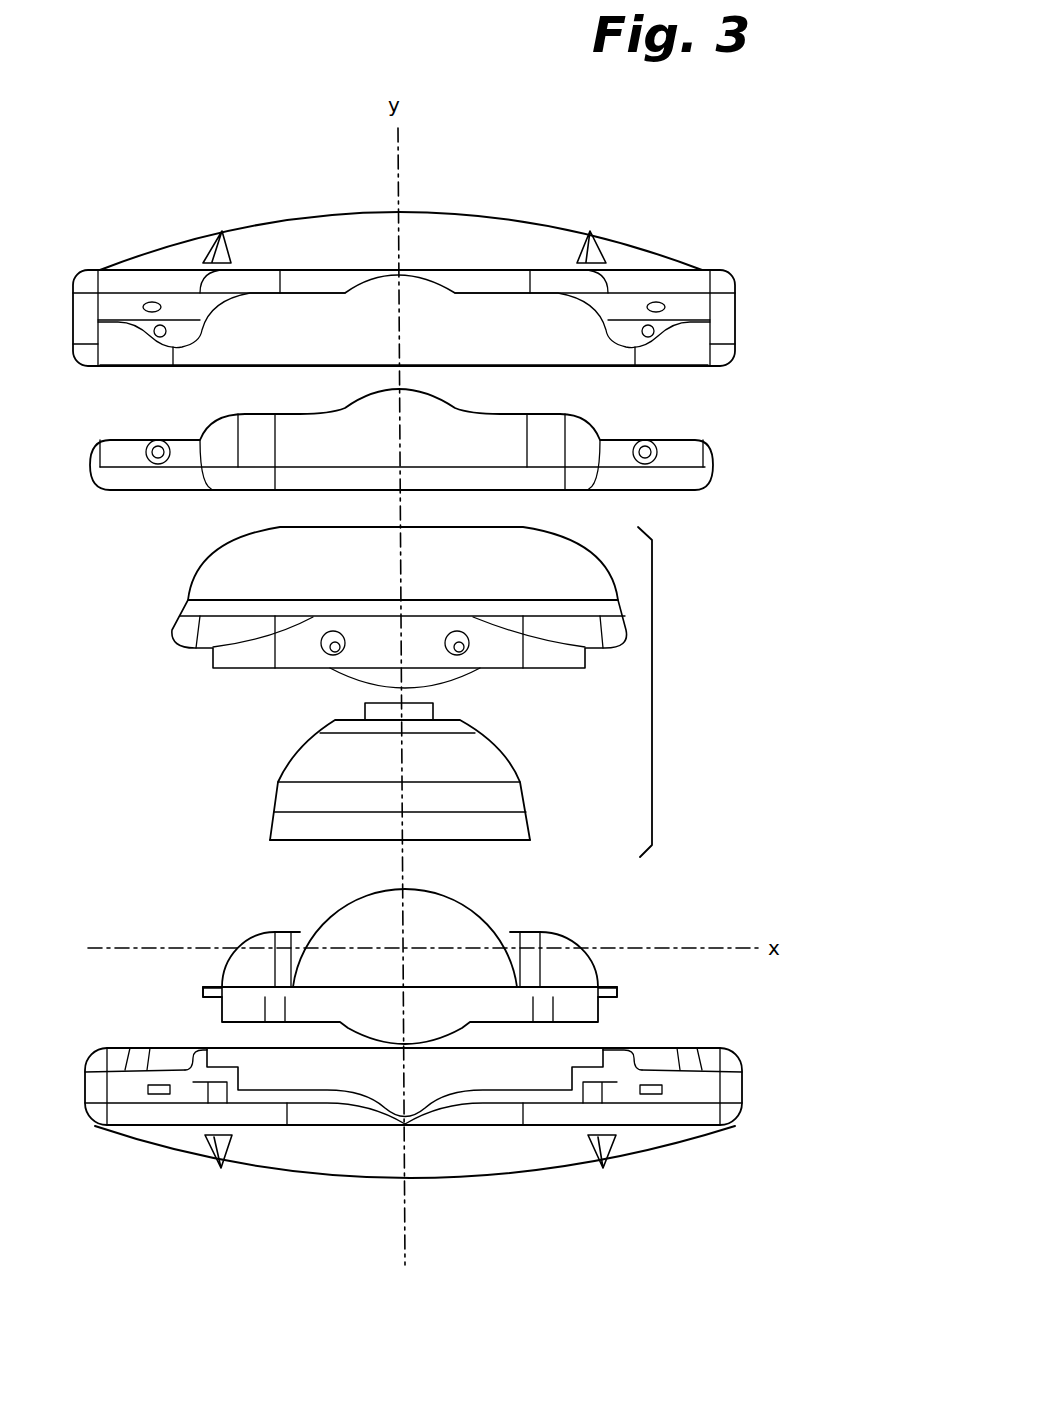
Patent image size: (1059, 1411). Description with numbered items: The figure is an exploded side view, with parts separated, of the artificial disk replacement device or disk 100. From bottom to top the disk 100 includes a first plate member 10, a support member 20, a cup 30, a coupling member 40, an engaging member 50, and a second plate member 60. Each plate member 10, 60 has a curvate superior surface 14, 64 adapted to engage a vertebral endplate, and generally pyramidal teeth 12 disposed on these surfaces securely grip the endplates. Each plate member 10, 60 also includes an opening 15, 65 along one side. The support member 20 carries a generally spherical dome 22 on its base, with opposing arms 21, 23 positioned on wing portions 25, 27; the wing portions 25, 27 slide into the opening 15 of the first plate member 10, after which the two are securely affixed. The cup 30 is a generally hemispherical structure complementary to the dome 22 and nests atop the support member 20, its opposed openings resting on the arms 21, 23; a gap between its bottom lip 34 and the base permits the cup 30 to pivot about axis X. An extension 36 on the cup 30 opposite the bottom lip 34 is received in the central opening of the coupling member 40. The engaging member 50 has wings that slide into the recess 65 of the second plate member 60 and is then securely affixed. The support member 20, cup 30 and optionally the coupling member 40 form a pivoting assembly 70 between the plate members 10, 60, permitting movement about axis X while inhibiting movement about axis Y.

The artificial disk replacement device 100 is at (163, 142).
The first plate member 10 is at (744, 1068).
The teeth 12 is at (592, 232).
The superior surface 14 is at (500, 1158).
The opening 15 is at (588, 1070).
The support member 20 is at (503, 901).
The arm 21 is at (258, 945).
The dome 22 is at (332, 905).
The arm 23 is at (560, 942).
The wing portion 25 is at (205, 994).
The wing portion 27 is at (616, 993).
The cup 30 is at (518, 757).
The bottom lip 34 is at (532, 840).
The extension 36 is at (368, 712).
The coupling member 40 is at (600, 556).
The engaging member 50 is at (695, 437).
The second plate member 60 is at (700, 253).
The superior surface 64 is at (330, 235).
The opening 65 is at (511, 338).
The pivoting assembly 70 is at (660, 695).